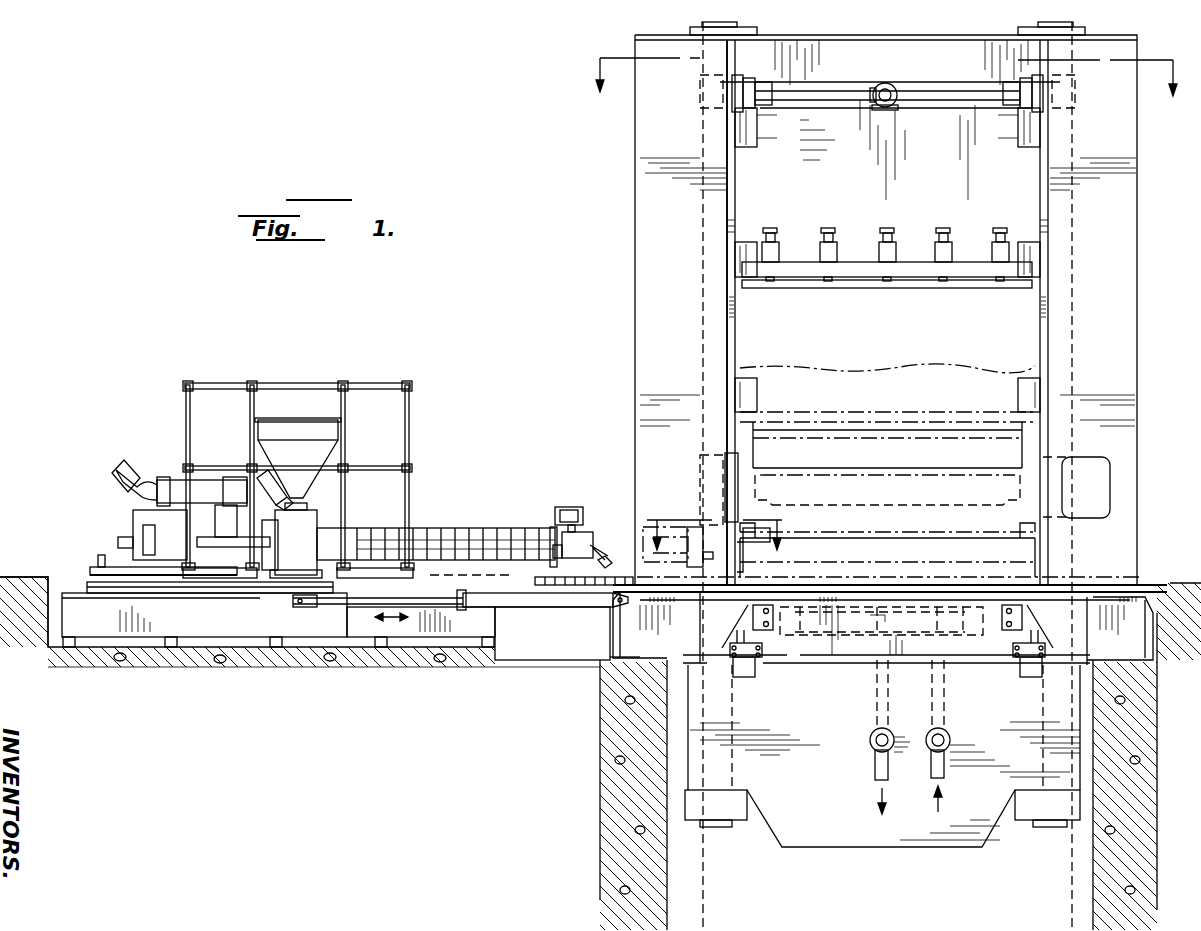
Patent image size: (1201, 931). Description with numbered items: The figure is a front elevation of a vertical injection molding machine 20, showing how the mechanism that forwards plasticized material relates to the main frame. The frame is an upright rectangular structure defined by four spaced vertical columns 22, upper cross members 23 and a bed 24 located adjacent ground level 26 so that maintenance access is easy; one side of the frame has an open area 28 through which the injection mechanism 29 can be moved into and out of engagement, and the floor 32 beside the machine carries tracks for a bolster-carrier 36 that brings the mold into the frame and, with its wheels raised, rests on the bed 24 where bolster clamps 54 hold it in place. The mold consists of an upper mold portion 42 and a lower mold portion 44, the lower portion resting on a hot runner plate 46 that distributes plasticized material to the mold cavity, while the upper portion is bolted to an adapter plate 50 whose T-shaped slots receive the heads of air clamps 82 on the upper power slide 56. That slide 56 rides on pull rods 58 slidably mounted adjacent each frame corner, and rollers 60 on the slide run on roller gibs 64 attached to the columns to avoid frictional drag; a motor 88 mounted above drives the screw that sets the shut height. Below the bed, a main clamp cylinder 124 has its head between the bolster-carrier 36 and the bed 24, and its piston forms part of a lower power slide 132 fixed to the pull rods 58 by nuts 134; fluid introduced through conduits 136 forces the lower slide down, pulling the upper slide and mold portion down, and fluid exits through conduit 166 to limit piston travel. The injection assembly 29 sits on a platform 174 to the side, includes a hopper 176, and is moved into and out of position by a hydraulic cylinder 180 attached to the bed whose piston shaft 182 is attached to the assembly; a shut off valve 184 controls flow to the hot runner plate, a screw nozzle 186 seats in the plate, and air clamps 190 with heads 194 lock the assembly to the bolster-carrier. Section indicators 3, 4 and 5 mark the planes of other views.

The section line 3- 3 is at (647, 56).
The section line 4- 4 is at (719, 520).
The section line 5- 5 is at (1098, 59).
The vertical injection molding machine 20 is at (598, 316).
The vertical columns 22 is at (635, 185).
The upper cross members 23 is at (946, 73).
The bed 24 is at (690, 636).
The ground level 26 is at (40, 572).
The open area 28 is at (652, 480).
The injection assembly 29 is at (351, 525).
The floor 32 is at (1150, 585).
The bolster-carrier 36 is at (944, 578).
The upper mold portion 42 is at (940, 458).
The lower mold portion 44 is at (940, 531).
The hot runner plate 46 is at (767, 543).
The adapter plate 50 is at (802, 290).
The bolster clamps 54 is at (755, 638).
The upper power slide 56 is at (892, 191).
The pull rods 58 is at (703, 395).
The rollers 60 is at (735, 140).
The roller gib 64 is at (735, 335).
The air clamps 82 is at (828, 252).
The motor 88 is at (882, 84).
The main clamp cylinder 124 is at (855, 630).
The lower power slide 132 is at (830, 832).
The nuts 134 is at (712, 812).
The conduits 136 is at (946, 765).
The conduit 166 is at (875, 770).
The platform 174 is at (222, 648).
The hopper 176 is at (290, 430).
The hydraulic cylinder 180 is at (535, 645).
The piston shaft 182 is at (350, 648).
The shut off valve 184 is at (568, 500).
The screw nozzle 186 is at (600, 545).
The air clamps 190 is at (565, 540).
The head 194 is at (605, 568).